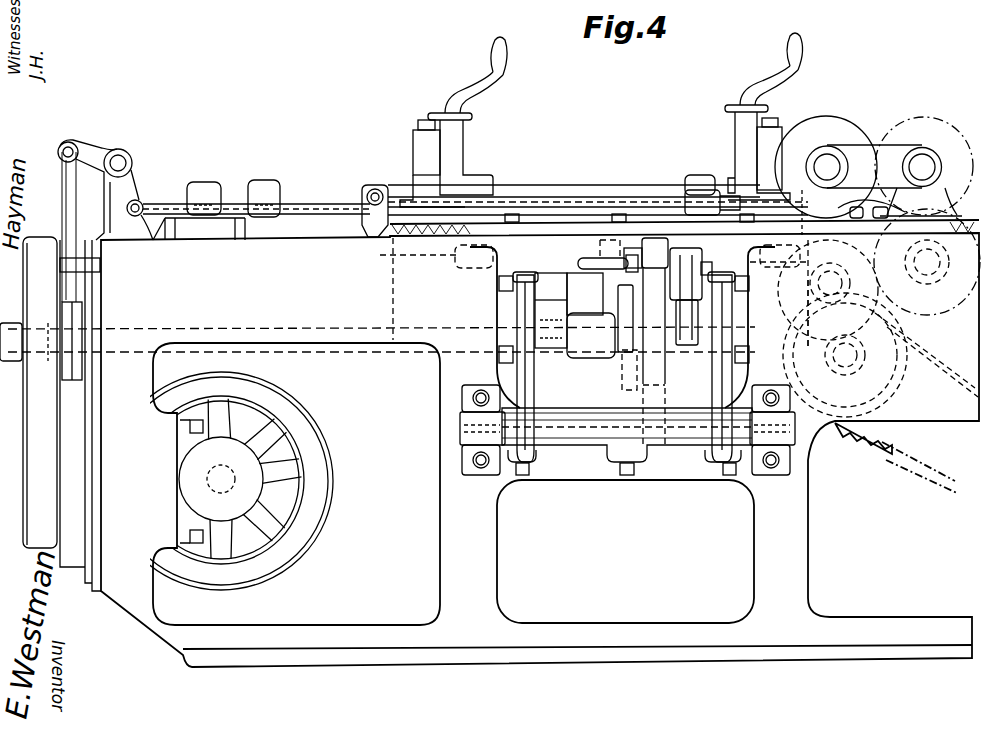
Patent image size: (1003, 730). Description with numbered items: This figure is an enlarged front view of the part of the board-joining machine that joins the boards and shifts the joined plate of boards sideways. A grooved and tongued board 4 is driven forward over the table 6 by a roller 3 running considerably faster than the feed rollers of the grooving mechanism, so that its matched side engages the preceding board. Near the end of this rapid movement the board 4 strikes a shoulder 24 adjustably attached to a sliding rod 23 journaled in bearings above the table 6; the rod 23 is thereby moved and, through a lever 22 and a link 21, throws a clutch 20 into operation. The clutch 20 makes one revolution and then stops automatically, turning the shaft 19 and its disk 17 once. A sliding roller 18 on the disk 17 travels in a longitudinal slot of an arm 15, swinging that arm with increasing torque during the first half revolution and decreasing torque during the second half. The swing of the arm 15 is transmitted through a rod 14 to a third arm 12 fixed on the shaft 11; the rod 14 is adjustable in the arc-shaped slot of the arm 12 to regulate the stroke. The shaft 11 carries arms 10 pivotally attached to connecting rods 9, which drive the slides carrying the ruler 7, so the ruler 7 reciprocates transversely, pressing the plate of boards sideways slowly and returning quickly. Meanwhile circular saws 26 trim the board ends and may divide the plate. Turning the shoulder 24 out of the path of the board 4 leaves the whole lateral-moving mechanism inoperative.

The roller 3 is at (828, 118).
The board 4 is at (538, 222).
The table 6 is at (310, 238).
The ruler 7 is at (580, 222).
The connecting rods 9 is at (516, 304).
The arms 10 is at (527, 322).
The axle or shaft 11 is at (683, 435).
The third arm 12 is at (652, 238).
The rod 14 is at (672, 290).
The arm 15 is at (640, 298).
The disk 17 is at (627, 335).
The sliding roller 18 is at (644, 397).
The shaft 19 is at (338, 344).
The clutch 20 is at (36, 240).
The link 21 is at (62, 174).
The lever 22 is at (106, 179).
The sliding rod 23 is at (160, 204).
The shoulder 24 is at (372, 237).
The circular saws 26 is at (393, 292).